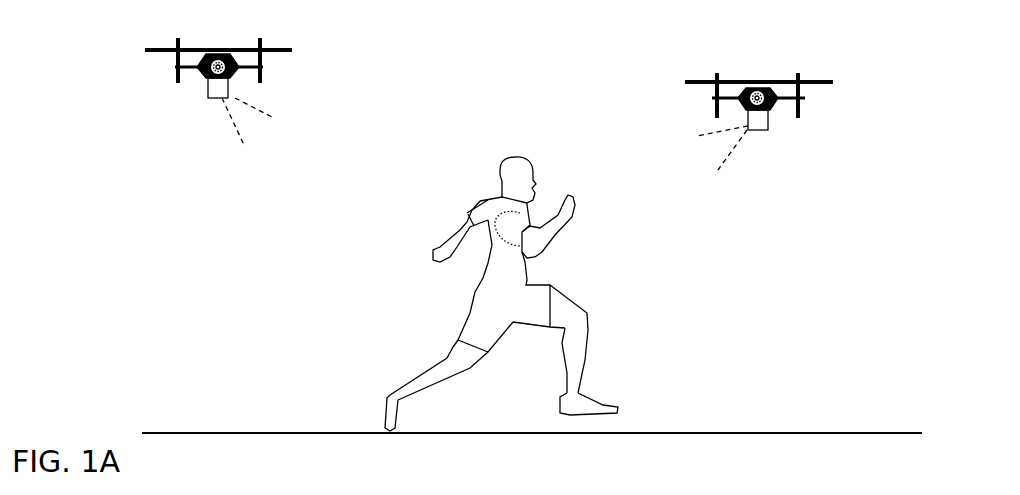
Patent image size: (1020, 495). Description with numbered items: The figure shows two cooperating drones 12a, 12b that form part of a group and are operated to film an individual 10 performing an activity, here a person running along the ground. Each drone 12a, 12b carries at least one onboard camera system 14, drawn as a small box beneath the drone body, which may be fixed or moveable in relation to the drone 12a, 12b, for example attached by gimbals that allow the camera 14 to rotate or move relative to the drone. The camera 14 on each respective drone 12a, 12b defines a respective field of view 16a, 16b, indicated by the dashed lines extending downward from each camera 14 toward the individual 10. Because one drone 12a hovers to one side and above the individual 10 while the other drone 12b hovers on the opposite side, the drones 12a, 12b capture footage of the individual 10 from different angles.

The individual 10 is at (480, 203).
The drone 12a is at (758, 87).
The drone 12b is at (218, 55).
The onboard camera system 14 is at (208, 86).
The field of view 16a is at (708, 130).
The field of view 16b is at (255, 108).